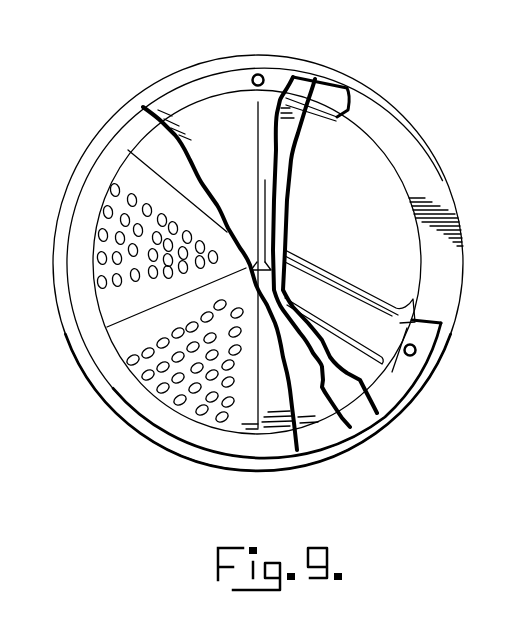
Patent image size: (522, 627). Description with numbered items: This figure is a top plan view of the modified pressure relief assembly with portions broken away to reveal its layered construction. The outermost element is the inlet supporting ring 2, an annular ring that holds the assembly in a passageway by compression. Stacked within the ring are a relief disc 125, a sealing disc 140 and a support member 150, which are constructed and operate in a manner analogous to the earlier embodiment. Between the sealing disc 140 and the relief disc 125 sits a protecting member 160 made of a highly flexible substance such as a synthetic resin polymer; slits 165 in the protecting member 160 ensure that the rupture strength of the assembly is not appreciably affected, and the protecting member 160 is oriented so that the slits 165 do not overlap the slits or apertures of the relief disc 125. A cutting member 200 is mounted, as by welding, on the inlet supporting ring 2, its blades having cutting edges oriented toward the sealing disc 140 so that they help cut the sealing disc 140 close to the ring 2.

The inlet supporting ring 2 is at (417, 125).
The relief disc 125 is at (97, 155).
The sealing disc 140 is at (318, 76).
The support member 150 is at (345, 90).
The protecting member 160 is at (245, 66).
The slits 165 is at (262, 178).
The cutting member 200 is at (316, 264).